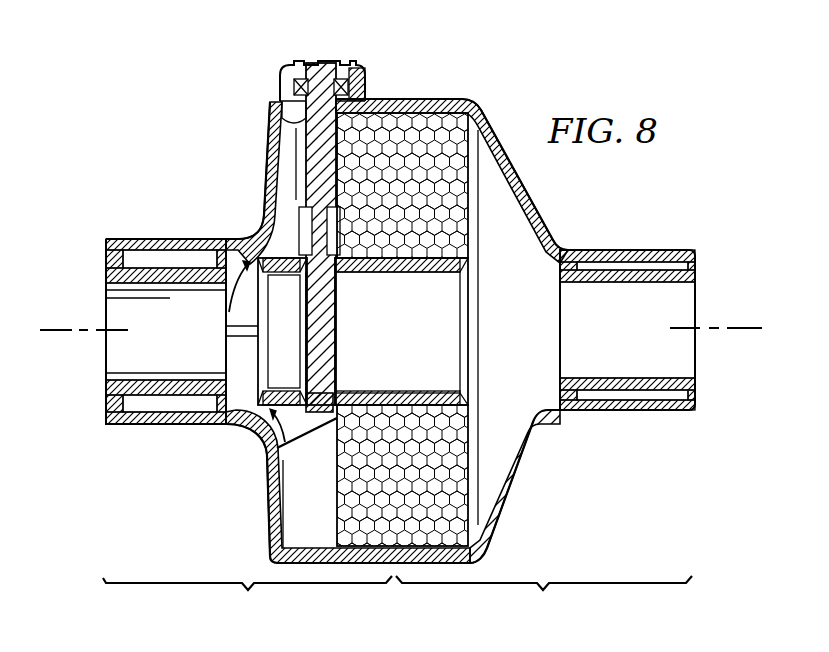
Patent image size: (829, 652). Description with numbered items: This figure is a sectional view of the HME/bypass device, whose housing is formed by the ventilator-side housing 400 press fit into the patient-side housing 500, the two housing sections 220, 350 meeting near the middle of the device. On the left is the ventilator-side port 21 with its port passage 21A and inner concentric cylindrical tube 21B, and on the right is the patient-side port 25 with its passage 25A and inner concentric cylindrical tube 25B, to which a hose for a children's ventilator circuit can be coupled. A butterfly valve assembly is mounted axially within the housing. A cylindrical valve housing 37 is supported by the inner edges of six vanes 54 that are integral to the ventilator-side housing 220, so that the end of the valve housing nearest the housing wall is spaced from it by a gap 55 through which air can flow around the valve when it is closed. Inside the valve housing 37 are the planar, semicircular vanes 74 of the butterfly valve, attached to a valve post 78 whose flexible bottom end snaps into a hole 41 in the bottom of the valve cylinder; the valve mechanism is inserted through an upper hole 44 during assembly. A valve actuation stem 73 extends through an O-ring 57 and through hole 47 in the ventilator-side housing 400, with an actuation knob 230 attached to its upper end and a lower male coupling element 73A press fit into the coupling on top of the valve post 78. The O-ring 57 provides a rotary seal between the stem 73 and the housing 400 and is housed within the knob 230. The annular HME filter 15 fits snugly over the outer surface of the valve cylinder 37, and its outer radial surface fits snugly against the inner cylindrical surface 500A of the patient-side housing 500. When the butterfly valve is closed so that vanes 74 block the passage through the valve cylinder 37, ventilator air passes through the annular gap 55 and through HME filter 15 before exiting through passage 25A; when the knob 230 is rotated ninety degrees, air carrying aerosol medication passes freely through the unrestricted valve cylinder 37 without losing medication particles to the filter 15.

The HME filter 15 is at (447, 232).
The ventilator-side port 21 is at (163, 425).
The ventilator-side port passage 21A is at (110, 353).
The inner concentric cylindrical tube of ventilator-side port 21B is at (122, 267).
The patient-side port 25 is at (665, 249).
The patient-side port passage 25A is at (688, 353).
The inner concentric cylindrical tube 25B is at (692, 282).
The valve housing 37 is at (408, 263).
The hole 41 is at (303, 378).
The upper hole 44 is at (293, 284).
The hole 47 is at (273, 118).
The vanes 54 is at (266, 201).
The gap 55 is at (229, 300).
The O-ring 57 is at (284, 83).
The valve actuation stem 73 is at (270, 149).
The male coupling element 73A is at (338, 273).
The vanes of the butterfly valve 74 is at (300, 228).
The valve post 78 is at (333, 348).
The ventilator-side housing 220 is at (247, 601).
The actuation knob 230 is at (333, 62).
The patient-side housing 350 is at (544, 600).
The ventilator-side housing 400 is at (262, 165).
The patient-side housing 500 is at (512, 478).
The inner cylindrical surface of patient-side housing 500A is at (517, 427).